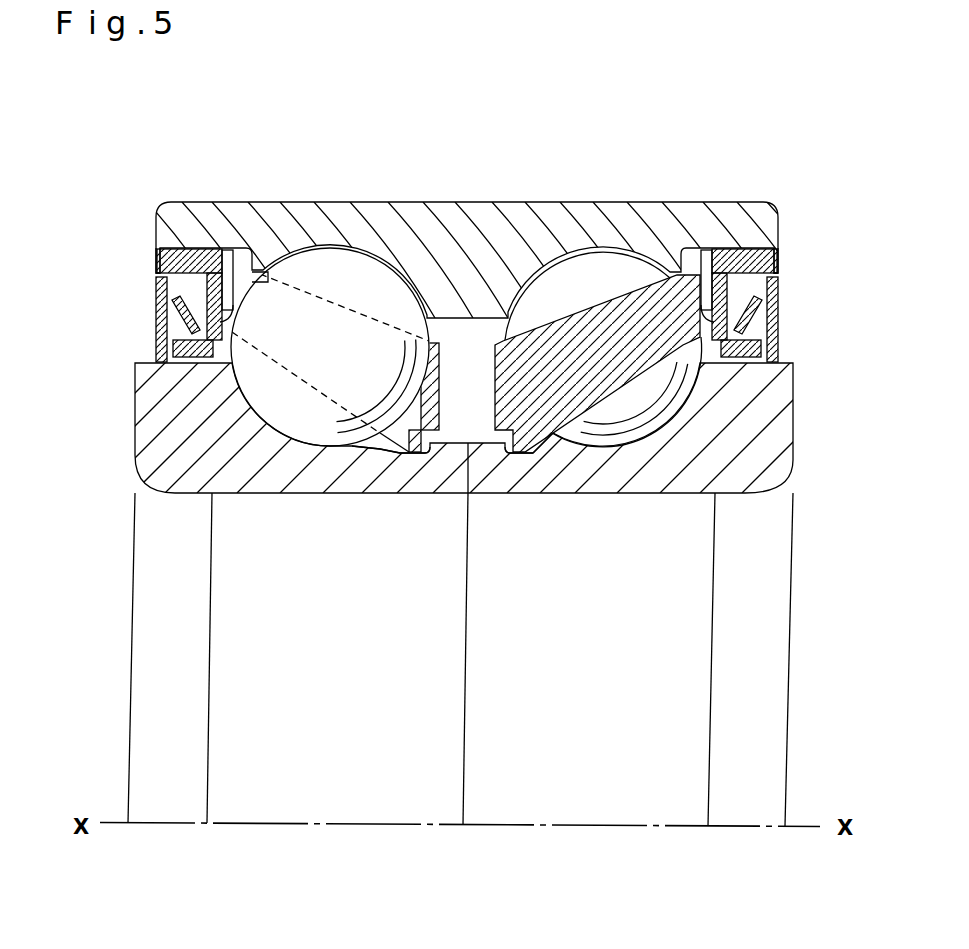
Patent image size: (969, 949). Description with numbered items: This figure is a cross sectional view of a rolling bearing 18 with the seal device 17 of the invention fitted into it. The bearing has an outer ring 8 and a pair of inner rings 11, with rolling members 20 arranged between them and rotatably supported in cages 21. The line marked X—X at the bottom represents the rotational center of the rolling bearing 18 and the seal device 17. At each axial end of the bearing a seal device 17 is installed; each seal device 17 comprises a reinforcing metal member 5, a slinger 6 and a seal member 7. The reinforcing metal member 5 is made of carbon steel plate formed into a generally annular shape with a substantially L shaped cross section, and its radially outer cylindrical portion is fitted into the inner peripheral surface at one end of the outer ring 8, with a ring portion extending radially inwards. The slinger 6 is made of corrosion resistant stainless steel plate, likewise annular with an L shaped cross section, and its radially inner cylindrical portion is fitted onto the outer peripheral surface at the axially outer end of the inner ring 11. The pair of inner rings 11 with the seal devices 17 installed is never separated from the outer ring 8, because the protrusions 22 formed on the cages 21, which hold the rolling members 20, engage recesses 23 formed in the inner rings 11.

The reinforcing metal member 5 is at (192, 250).
The slinger 6 is at (150, 336).
The seal member 7 is at (157, 240).
The outer ring 8 is at (445, 247).
The inner ring 11 is at (175, 460).
The seal device 17 is at (150, 301).
The rolling bearing 18 is at (529, 201).
The rolling member 20 is at (593, 423).
The cage 21 is at (265, 272).
The protrusion 22 is at (422, 448).
The recess 23 is at (375, 445).